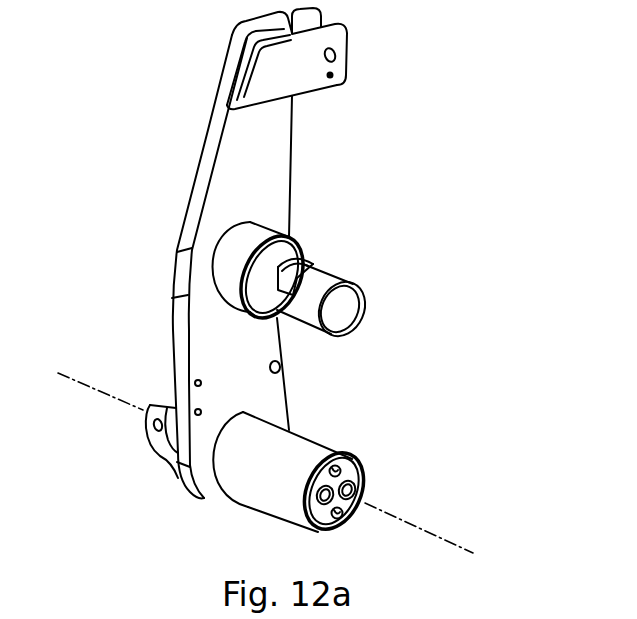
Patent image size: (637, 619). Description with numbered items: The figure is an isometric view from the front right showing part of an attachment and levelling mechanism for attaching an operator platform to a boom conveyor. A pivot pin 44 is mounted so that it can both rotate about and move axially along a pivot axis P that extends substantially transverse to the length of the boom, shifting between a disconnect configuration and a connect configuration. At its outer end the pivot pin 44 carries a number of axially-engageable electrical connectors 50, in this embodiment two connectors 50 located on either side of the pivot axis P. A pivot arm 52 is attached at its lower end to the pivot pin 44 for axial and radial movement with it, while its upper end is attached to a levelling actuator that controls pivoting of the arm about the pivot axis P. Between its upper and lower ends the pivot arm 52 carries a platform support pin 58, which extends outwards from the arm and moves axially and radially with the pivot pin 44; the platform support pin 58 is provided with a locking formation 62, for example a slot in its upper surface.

The pivot arm 52 is at (277, 167).
The locking formation 62 is at (302, 272).
The platform support pin 58 is at (350, 312).
The pivot pin 44 is at (288, 443).
The electrical connectors 50 is at (363, 482).
The pivot axis P is at (423, 530).